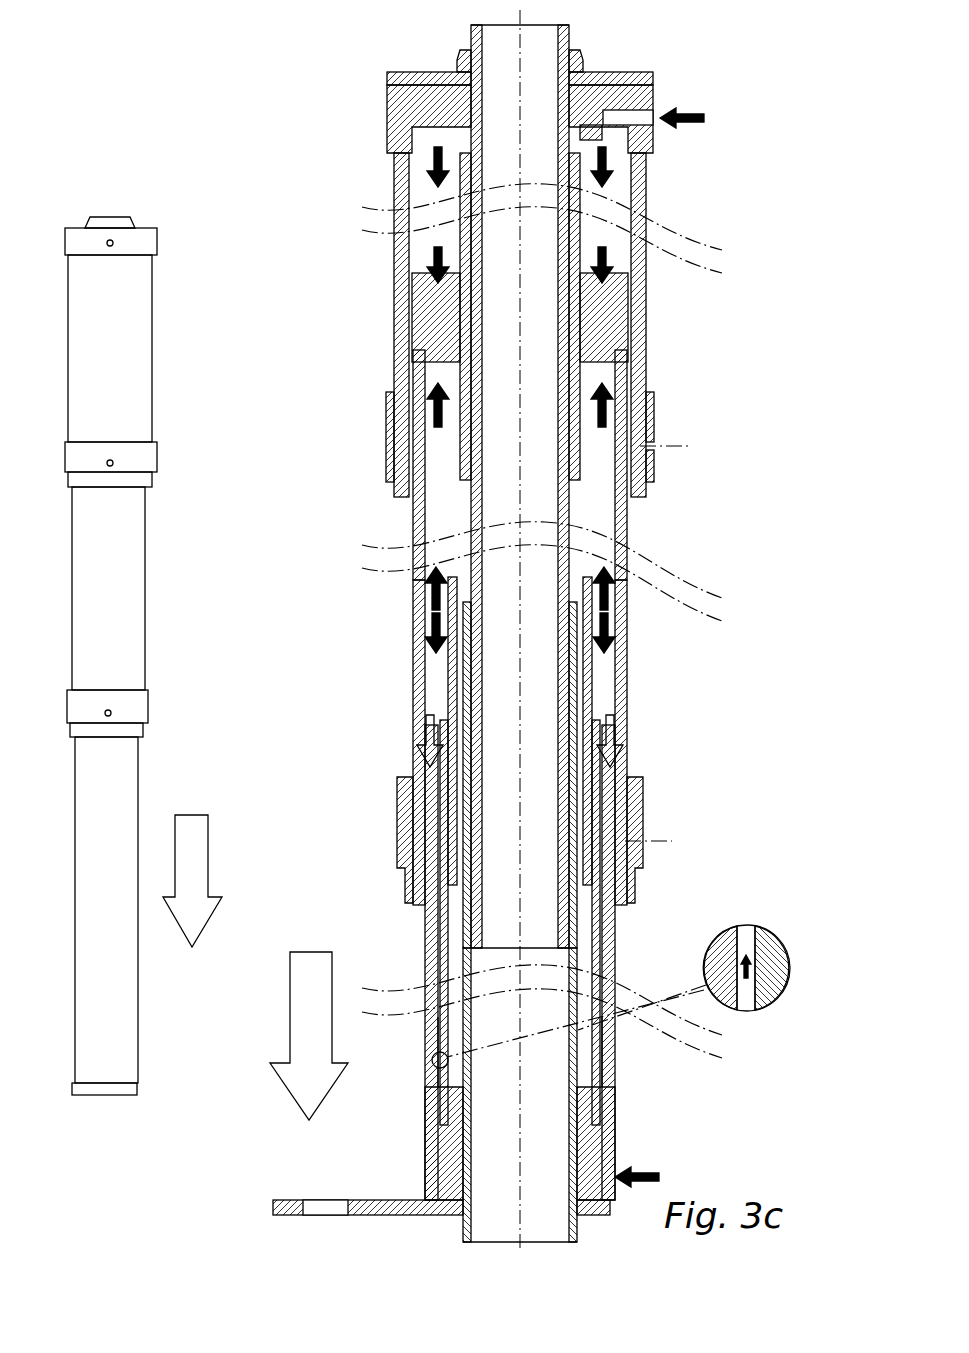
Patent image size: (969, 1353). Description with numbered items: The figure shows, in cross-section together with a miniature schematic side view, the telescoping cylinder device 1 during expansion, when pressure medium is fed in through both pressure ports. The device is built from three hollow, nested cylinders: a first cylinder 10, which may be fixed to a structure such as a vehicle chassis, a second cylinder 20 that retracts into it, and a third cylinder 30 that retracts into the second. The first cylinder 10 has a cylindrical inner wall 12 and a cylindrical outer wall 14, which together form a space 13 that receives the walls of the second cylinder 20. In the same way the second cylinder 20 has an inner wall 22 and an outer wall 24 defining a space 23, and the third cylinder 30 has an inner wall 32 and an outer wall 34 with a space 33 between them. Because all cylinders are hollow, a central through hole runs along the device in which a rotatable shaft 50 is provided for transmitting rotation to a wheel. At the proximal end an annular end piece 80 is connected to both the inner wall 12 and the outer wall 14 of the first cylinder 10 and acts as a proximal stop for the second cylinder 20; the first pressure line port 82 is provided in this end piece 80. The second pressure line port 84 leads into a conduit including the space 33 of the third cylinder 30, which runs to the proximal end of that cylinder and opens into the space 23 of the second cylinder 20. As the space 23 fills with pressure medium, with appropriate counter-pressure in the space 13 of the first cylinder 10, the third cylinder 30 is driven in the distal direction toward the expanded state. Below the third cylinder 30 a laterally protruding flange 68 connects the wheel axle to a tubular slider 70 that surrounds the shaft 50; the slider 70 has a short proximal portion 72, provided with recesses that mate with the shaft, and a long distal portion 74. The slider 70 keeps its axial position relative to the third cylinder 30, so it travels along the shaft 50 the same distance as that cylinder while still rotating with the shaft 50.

The telescoping cylinder device 1 is at (732, 156).
The first cylinder 10 is at (396, 342).
The inner wall 12 is at (412, 300).
The space 13 is at (430, 200).
The outer wall 14 is at (425, 272).
The second cylinder 20 is at (416, 702).
The inner wall 22 is at (450, 657).
The space 23 is at (432, 492).
The outer wall 24 is at (413, 600).
The third cylinder 30 is at (425, 1128).
The inner wall 32 is at (440, 955).
The space 33 is at (748, 1012).
The outer wall 34 is at (428, 920).
The rotatable shaft 50 is at (570, 580).
The flange 68 is at (370, 1198).
The slider 70 is at (576, 1238).
The proximal portion 72 is at (568, 680).
The distal portion 74 is at (565, 927).
The annular end piece 80 is at (392, 122).
The first pressure line port 82 is at (662, 117).
The second pressure line port 84 is at (628, 1190).